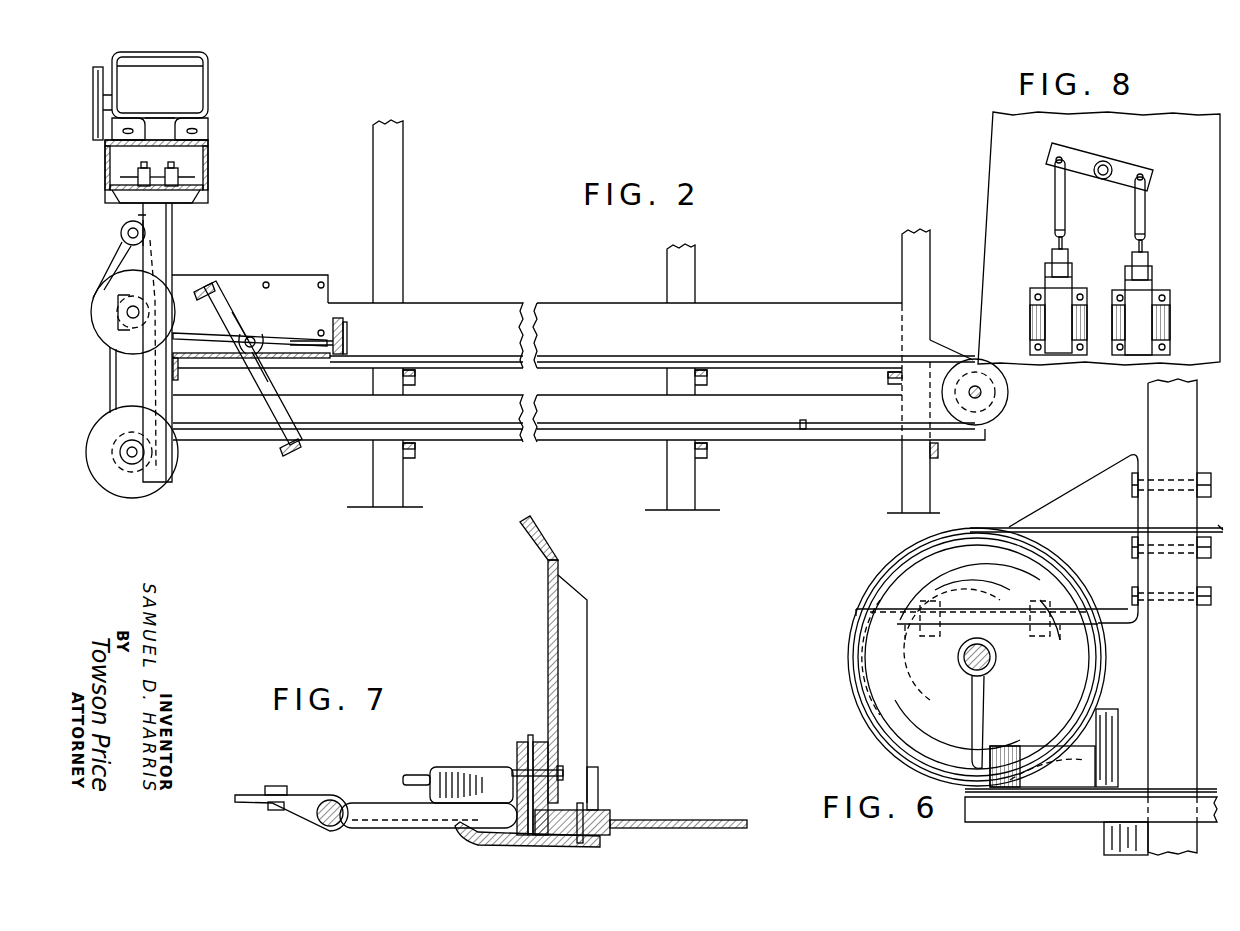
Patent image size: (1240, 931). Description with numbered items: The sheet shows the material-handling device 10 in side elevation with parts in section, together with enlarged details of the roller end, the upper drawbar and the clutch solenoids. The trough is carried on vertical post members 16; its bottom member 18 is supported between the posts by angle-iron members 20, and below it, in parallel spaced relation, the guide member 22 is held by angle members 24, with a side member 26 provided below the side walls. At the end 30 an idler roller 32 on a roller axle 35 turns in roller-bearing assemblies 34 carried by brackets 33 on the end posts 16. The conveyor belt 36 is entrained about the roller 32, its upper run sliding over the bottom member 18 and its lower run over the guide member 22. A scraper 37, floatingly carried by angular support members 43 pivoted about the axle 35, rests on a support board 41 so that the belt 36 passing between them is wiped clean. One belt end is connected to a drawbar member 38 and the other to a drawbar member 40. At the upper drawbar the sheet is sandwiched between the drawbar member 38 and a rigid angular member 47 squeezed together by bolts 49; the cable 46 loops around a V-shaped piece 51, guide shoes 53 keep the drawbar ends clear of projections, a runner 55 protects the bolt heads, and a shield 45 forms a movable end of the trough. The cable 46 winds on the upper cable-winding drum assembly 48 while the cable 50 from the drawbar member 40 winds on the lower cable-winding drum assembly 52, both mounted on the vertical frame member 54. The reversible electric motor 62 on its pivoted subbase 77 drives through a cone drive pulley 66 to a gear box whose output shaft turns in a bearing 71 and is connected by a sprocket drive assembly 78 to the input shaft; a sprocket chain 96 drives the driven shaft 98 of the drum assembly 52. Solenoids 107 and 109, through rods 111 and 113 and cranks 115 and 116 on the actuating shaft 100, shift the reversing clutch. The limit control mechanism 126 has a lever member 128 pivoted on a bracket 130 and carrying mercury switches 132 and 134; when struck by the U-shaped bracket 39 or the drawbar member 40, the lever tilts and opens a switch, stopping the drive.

In FIG. 2, the material-handling device 10 is at (470, 300).
In FIG. 2, the vertical post members 16 is at (403, 230).
In FIG. 6, the vertical post members 16 is at (1148, 420).
In FIG. 2, the bottom member 18 is at (250, 358).
In FIG. 2, the angle-iron members 20 is at (416, 378).
In FIG. 2, the guide member 22 is at (600, 441).
In FIG. 6, the guide member 22 is at (1005, 822).
In FIG. 2, the angle members 24 is at (416, 453).
In FIG. 2, the side member 26 is at (590, 369).
In FIG. 2, the end of the trough 30 is at (936, 335).
In FIG. 2, the idler roller 32 is at (994, 397).
In FIG. 6, the idler roller 32 is at (862, 720).
In FIG. 2, the brackets 33 is at (955, 350).
In FIG. 6, the brackets 33 is at (1062, 500).
In FIG. 2, the roller-bearing assemblies 34 is at (1000, 412).
In FIG. 6, the roller-bearing assemblies 34 is at (860, 672).
In FIG. 6, the roller axle 35 is at (968, 690).
In FIG. 2, the conveyor belt 36 is at (505, 355).
In FIG. 7, the conveyor belt 36 is at (700, 820).
In FIG. 6, the conveyor belt 36 is at (1110, 528).
In FIG. 6, the scraper 37 is at (1110, 709).
In FIG. 2, the drawbar member 38 is at (345, 340).
In FIG. 7, the drawbar member 38 is at (605, 810).
In FIG. 2, the U-shaped bracket 39 is at (300, 340).
In FIG. 7, the U-shaped bracket 39 is at (415, 775).
In FIG. 2, the drawbar member 40 is at (800, 420).
In FIG. 6, the support board 41 is at (1100, 845).
In FIG. 6, the angular support members 43 is at (1030, 726).
In FIG. 2, the shield 45 is at (345, 320).
In FIG. 7, the shield 45 is at (560, 556).
In FIG. 2, the cable 46 is at (208, 326).
In FIG. 7, the cable 46 is at (240, 795).
In FIG. 7, the rigid angular member 47 is at (520, 742).
In FIG. 2, the upper cable-winding drum assembly 48 is at (93, 330).
In FIG. 7, the bolts 49 is at (565, 772).
In FIG. 2, the cable 50 is at (250, 423).
In FIG. 7, the V-shaped piece 51 is at (375, 803).
In FIG. 2, the lower cable-winding drum assembly 52 is at (133, 472).
In FIG. 7, the guide shoes 53 is at (460, 767).
In FIG. 2, the vertical frame member 54 is at (172, 232).
In FIG. 7, the runner 55 is at (462, 831).
In FIG. 2, the reversible electric motor 62 is at (209, 94).
In FIG. 2, the cone drive pulley 66 is at (93, 80).
In FIG. 2, the bearing 71 is at (125, 226).
In FIG. 2, the subbase 77 is at (175, 135).
In FIG. 2, the sprocket drive assembly 78 is at (105, 265).
In FIG. 2, the sprocket chain 96 is at (110, 395).
In FIG. 2, the driven shaft 98 is at (120, 455).
In FIG. 8, the actuating shaft 100 is at (1108, 162).
In FIG. 2, the solenoid 107 is at (105, 168).
In FIG. 8, the solenoid 107 is at (1030, 320).
In FIG. 2, the solenoid 109 is at (178, 177).
In FIG. 8, the solenoid 109 is at (1168, 316).
In FIG. 8, the rod 111 is at (1055, 218).
In FIG. 8, the rod 113 is at (1148, 224).
In FIG. 8, the crank 115 is at (1048, 158).
In FIG. 8, the crank 116 is at (1152, 175).
In FIG. 2, the limit control mechanism 126 is at (268, 363).
In FIG. 2, the lever member 128 is at (240, 312).
In FIG. 2, the bracket 130 is at (226, 355).
In FIG. 2, the mercury switch 132 is at (228, 254).
In FIG. 2, the mercury switch 134 is at (290, 455).